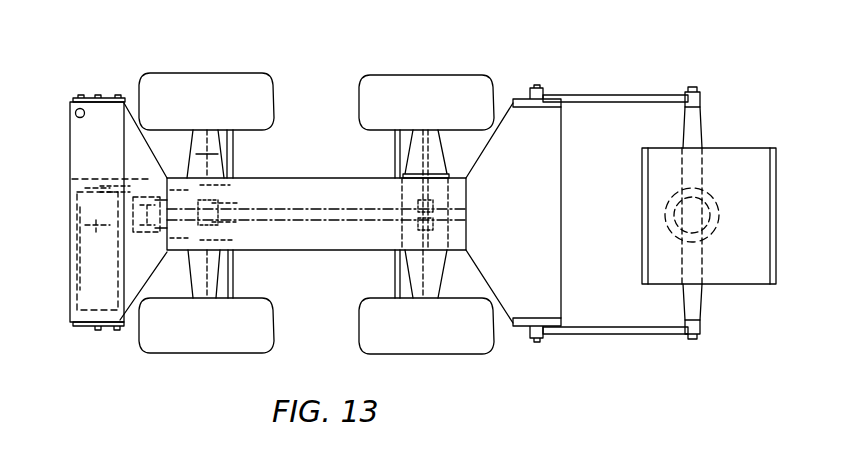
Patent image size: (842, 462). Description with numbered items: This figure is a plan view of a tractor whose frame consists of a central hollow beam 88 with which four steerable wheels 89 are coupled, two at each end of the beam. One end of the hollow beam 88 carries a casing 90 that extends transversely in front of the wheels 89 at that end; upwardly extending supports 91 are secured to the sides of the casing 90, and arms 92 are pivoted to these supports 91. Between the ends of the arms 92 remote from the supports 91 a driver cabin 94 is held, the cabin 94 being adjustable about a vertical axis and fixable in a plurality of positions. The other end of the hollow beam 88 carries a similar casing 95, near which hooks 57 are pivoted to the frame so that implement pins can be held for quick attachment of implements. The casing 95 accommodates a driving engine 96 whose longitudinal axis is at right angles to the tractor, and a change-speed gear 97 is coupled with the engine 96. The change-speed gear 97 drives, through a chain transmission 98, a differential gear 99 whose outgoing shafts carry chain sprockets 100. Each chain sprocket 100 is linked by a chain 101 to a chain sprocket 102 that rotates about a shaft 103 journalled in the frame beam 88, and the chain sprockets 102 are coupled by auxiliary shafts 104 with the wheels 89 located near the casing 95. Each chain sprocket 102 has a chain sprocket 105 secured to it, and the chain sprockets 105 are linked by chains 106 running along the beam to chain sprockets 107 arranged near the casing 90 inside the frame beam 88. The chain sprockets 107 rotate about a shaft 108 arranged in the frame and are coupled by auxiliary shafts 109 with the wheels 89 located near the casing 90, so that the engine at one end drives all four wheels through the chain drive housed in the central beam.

The hook 57 is at (84, 96).
The central hollow beam 88 is at (317, 178).
The steerable wheel 89 is at (233, 84).
The casing 90 is at (562, 262).
The support 91 is at (537, 108).
The arm 92 is at (612, 94).
The driver cabin 94 is at (655, 167).
The casing 95 is at (126, 138).
The driving engine 96 is at (142, 297).
The change-speed gear 97 is at (111, 244).
The chain transmission 98 is at (112, 176).
The differential gear 99 is at (116, 230).
The chain sprocket 100 is at (145, 178).
The chain 101 is at (185, 216).
The chain sprocket 102 is at (242, 213).
The shaft 103 is at (205, 212).
The auxiliary shaft 104 is at (178, 160).
The chain sprocket 105 is at (245, 216).
The chain 106 is at (312, 198).
The chain sprocket 107 is at (398, 193).
The shaft 108 is at (448, 209).
The auxiliary shaft 109 is at (432, 150).